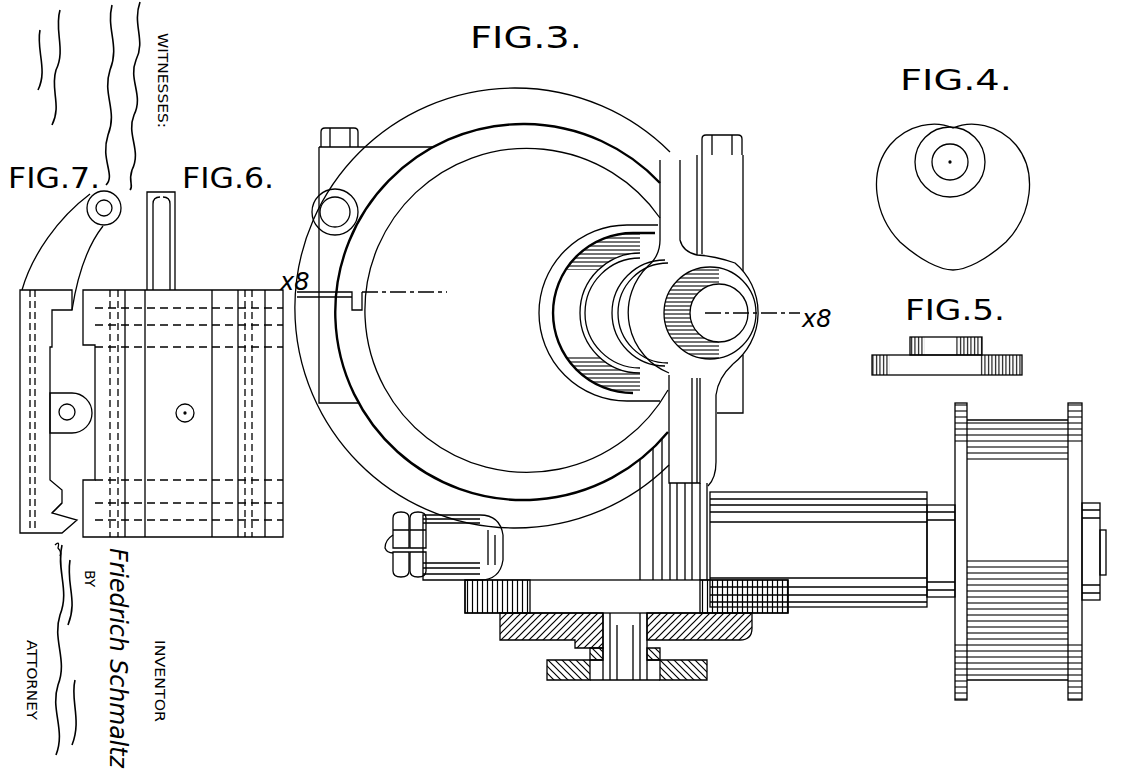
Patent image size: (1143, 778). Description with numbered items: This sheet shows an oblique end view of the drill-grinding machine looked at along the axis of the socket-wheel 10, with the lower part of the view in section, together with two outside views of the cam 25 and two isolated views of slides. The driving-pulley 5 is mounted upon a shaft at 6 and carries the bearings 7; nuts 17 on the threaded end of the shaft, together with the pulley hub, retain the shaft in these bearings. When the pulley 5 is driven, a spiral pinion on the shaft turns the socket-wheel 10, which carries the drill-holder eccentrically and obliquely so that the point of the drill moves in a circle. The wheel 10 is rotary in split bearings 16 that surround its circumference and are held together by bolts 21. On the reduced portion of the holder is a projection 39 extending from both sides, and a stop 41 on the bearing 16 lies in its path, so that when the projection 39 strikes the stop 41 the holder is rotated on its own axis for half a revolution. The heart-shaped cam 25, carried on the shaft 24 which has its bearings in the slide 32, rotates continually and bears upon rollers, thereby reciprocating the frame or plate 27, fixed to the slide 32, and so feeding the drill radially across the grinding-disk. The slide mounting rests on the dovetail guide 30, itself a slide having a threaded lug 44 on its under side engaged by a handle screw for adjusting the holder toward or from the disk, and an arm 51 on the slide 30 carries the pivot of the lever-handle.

In FIG. 3, the driving-pulley 5 is at (1018, 551).
In FIG. 3, the shaft 6 is at (1102, 578).
In FIG. 3, the bearings 7 is at (689, 549).
In FIG. 3, the socket-wheel 10 is at (504, 308).
In FIG. 3, the split bearings 16 is at (376, 276).
In FIG. 3, the nuts 17 is at (416, 558).
In FIG. 3, the bolts 21 is at (347, 130).
In FIG. 3, the shaft 24 is at (622, 672).
In FIG. 3, the heart-shaped cam 25 is at (690, 680).
In FIG. 4, the heart-shaped cam 25 is at (953, 197).
In FIG. 5, the heart-shaped cam 25 is at (1023, 367).
In FIG. 3, the frame or plate 27 is at (626, 598).
In FIG. 7, the dovetail guide 30 is at (43, 455).
In FIG. 3, the slide 32 is at (755, 636).
In FIG. 3, the projection 39 is at (695, 198).
In FIG. 3, the stop 41 is at (342, 215).
In FIG. 7, the threaded lug 44 is at (58, 400).
In FIG. 6, the arm 51 is at (163, 257).
In FIG. 7, the arm 51 is at (72, 255).